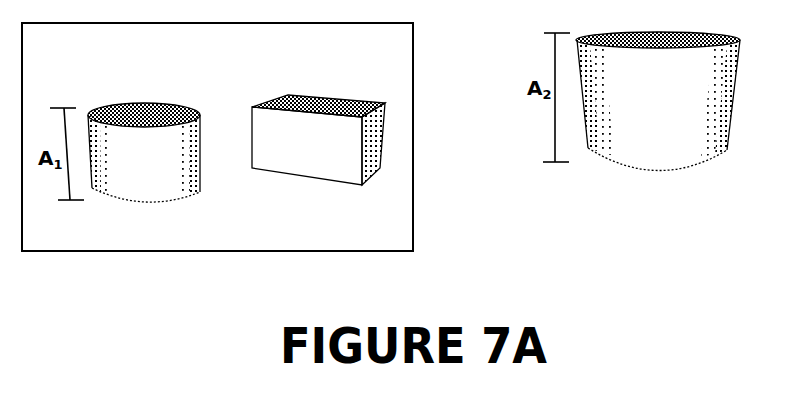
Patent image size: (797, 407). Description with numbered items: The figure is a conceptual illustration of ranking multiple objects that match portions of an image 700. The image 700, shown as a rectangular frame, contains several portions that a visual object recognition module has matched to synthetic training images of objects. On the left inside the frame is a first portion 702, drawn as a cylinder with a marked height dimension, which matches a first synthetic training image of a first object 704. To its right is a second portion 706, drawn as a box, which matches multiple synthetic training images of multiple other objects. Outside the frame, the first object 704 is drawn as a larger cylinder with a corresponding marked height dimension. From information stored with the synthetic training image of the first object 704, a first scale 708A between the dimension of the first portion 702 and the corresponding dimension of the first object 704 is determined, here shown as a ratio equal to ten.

The image 700 is at (130, 251).
The first portion 702 is at (187, 201).
The first object 704 is at (606, 163).
The second portion 706 is at (312, 187).
The first scale 708A is at (667, 283).